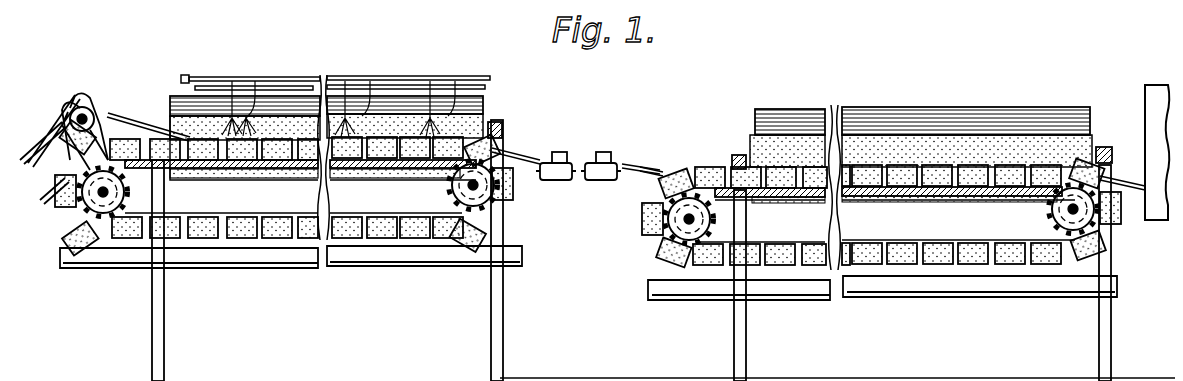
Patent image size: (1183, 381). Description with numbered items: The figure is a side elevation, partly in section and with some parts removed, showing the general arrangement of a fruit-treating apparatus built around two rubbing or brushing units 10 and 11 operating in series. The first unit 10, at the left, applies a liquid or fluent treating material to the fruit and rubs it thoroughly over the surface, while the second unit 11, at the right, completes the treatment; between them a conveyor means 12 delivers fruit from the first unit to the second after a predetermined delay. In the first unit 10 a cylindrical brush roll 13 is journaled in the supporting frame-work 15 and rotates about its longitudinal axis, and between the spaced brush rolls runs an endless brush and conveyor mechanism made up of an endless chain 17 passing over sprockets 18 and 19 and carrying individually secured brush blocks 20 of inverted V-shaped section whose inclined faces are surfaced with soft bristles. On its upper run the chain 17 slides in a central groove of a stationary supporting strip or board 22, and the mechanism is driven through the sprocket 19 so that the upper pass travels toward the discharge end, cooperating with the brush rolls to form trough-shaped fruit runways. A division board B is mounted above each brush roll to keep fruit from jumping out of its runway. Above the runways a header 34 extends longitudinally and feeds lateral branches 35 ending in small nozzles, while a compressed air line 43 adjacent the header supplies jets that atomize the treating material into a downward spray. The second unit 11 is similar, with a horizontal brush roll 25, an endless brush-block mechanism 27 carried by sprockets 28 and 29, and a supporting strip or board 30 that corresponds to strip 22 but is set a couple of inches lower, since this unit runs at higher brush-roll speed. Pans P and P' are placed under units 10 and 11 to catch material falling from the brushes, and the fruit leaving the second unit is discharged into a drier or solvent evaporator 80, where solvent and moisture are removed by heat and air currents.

The rubbing or brushing unit 10 is at (165, 64).
The rubbing or brushing unit 11 is at (1118, 68).
The conveyor means 12 is at (598, 179).
The brush roll 13 is at (450, 115).
The supporting frame-work 15 is at (163, 317).
The endless chain 17 is at (268, 218).
The sprocket 18 is at (133, 193).
The sprocket 19 is at (448, 188).
The brush block 20 is at (416, 128).
The supporting strip or board 22 is at (300, 180).
The brush roll 25 is at (868, 147).
The endless brush-block mechanism 27 is at (902, 257).
The sprocket 28 is at (709, 217).
The sprocket 29 is at (1048, 213).
The supporting strip or board 30 is at (968, 196).
The header 34 is at (250, 92).
The lateral branch 35 is at (228, 118).
The compressed air line 43 is at (292, 78).
The drier or solvent evaporator 80 is at (1153, 100).
The division board B is at (187, 100).
The pan P is at (291, 271).
The pan P' is at (882, 300).